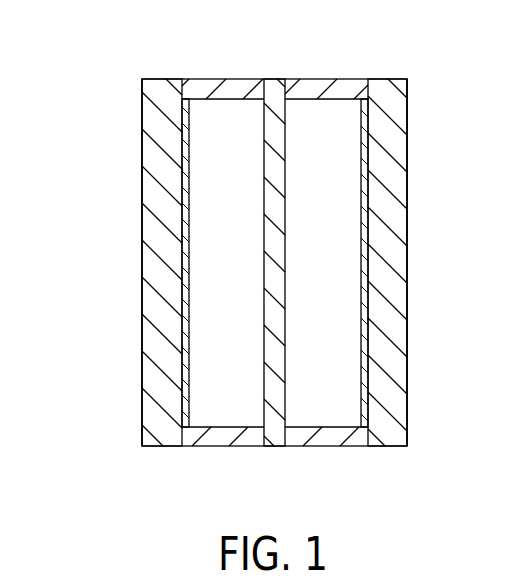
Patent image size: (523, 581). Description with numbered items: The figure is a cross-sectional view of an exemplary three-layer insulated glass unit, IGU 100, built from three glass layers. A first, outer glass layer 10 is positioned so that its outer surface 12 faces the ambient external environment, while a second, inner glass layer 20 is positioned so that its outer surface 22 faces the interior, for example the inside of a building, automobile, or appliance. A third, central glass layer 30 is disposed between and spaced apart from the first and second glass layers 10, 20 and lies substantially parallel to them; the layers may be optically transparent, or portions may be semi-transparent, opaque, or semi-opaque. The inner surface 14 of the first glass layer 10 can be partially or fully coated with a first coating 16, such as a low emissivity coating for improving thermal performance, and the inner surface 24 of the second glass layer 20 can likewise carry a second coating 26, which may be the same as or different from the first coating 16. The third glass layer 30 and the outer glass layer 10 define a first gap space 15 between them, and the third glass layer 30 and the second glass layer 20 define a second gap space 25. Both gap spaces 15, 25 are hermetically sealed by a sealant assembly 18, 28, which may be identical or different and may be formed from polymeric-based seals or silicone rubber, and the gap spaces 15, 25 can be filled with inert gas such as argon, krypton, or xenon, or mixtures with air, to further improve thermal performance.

The IGU 100 is at (92, 88).
The first glass layer 10 is at (390, 93).
The outer surface of first glass layer 12 is at (413, 181).
The inner surface of first glass layer 14 is at (352, 390).
The first gap space 15 is at (330, 247).
The first coating 16 is at (358, 110).
The sealant assembly 18 is at (336, 432).
The second glass layer 20 is at (158, 95).
The outer surface of second glass layer 22 is at (136, 317).
The inner surface of second glass layer 24 is at (194, 391).
The second gap space 25 is at (212, 197).
The second coating 26 is at (198, 108).
The sealant assembly 28 is at (190, 432).
The third glass layer 30 is at (275, 93).